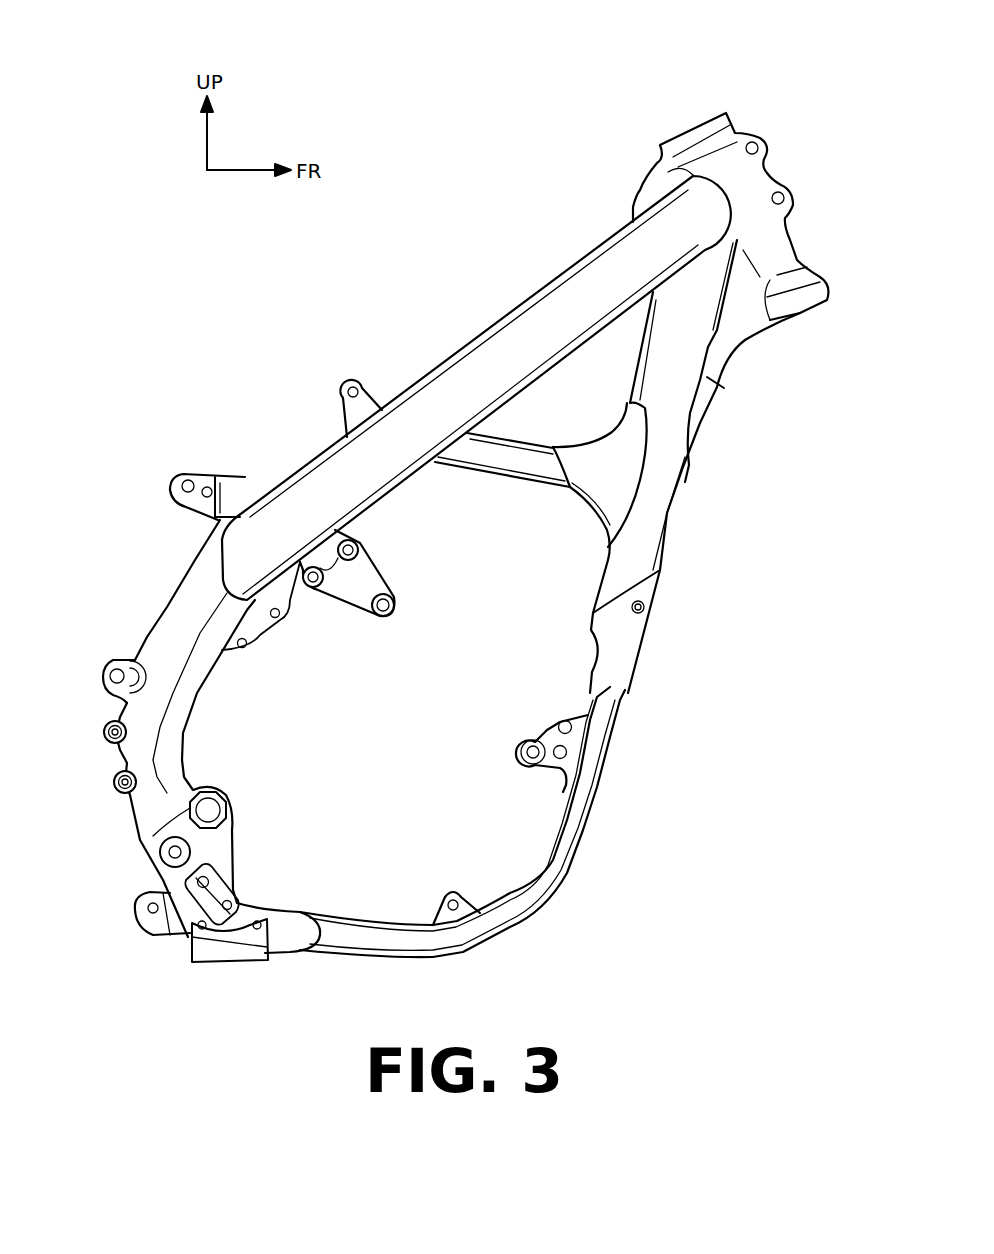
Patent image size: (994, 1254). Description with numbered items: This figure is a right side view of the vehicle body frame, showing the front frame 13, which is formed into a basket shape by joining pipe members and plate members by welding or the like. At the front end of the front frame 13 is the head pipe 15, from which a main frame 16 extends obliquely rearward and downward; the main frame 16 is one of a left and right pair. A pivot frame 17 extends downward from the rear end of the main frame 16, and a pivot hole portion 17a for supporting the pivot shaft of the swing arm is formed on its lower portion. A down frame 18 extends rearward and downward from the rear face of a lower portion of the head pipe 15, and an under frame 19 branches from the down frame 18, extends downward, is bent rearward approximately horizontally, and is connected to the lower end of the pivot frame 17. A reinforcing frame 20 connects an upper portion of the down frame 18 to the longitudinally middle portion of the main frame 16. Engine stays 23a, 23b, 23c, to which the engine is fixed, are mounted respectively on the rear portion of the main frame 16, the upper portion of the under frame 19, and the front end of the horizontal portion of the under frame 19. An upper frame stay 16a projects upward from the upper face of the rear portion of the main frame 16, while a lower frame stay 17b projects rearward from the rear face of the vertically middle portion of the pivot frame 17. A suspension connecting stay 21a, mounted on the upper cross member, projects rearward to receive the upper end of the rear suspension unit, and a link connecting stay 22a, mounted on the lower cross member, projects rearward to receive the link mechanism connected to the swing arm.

The front frame 13 is at (497, 150).
The head pipe 15 is at (700, 130).
The main frame 16 is at (498, 337).
The upper frame stay 16a is at (358, 378).
The pivot frame 17 is at (175, 612).
The pivot hole portion 17a is at (225, 805).
The lower frame stay 17b is at (112, 663).
The down frame 18 is at (663, 508).
The under frame 19 is at (575, 880).
The reinforcing frame 20 is at (510, 488).
The suspension connecting stay 21a is at (183, 474).
The link connecting stay 22a is at (130, 905).
The engine stay 23a is at (367, 608).
The engine stay 23b is at (545, 738).
The engine stay 23c is at (452, 888).